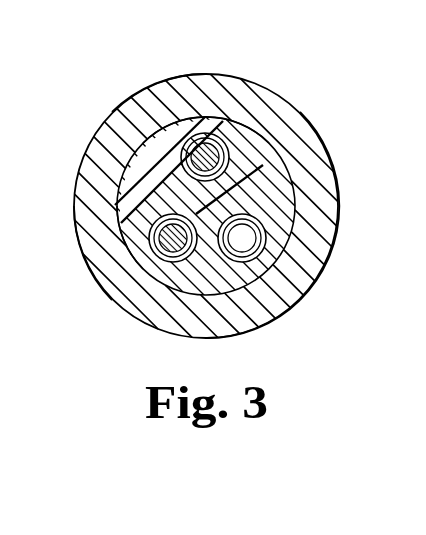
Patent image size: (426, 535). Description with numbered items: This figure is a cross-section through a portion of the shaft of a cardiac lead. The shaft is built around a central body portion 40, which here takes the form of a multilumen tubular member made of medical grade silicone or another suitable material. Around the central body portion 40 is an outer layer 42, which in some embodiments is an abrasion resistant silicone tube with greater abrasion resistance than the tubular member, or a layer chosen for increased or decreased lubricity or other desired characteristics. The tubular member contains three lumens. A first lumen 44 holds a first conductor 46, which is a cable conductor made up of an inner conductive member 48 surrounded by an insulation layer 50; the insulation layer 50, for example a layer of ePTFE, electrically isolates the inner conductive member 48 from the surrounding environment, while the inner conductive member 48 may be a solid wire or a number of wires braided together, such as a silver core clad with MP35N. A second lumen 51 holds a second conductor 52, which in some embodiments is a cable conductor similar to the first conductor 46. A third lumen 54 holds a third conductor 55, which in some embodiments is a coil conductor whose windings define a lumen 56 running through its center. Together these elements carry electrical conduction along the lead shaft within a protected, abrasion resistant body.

The central body portion 40 is at (160, 322).
The outer layer 42 is at (127, 295).
The first lumen 44 is at (227, 120).
The first conductor 46 is at (265, 140).
The inner conductive member 48 is at (148, 118).
The insulation layer 50 is at (300, 165).
The second lumen 51 is at (120, 222).
The second conductor 52 is at (130, 262).
The third lumen 54 is at (288, 305).
The third conductor 55 is at (325, 267).
The lumen 56 is at (240, 240).